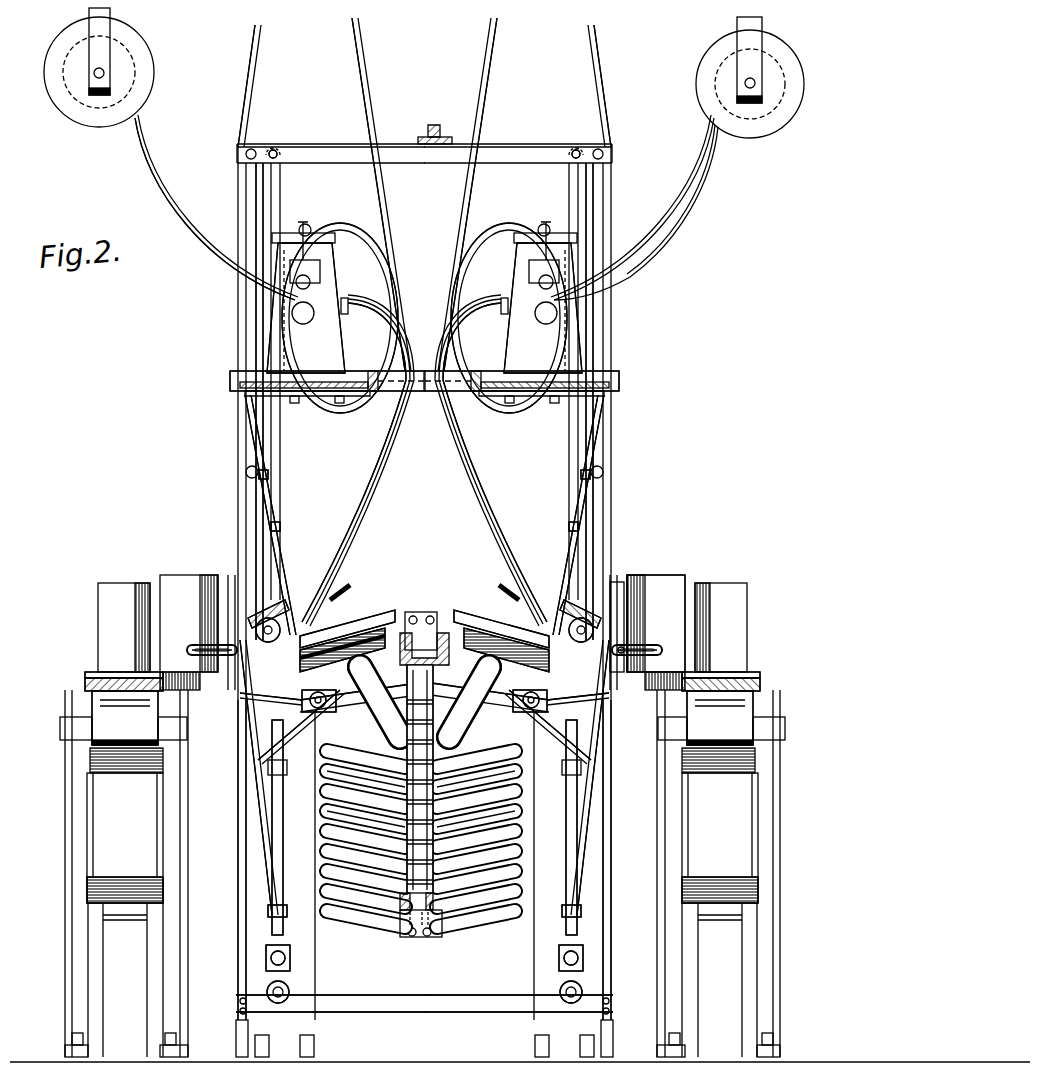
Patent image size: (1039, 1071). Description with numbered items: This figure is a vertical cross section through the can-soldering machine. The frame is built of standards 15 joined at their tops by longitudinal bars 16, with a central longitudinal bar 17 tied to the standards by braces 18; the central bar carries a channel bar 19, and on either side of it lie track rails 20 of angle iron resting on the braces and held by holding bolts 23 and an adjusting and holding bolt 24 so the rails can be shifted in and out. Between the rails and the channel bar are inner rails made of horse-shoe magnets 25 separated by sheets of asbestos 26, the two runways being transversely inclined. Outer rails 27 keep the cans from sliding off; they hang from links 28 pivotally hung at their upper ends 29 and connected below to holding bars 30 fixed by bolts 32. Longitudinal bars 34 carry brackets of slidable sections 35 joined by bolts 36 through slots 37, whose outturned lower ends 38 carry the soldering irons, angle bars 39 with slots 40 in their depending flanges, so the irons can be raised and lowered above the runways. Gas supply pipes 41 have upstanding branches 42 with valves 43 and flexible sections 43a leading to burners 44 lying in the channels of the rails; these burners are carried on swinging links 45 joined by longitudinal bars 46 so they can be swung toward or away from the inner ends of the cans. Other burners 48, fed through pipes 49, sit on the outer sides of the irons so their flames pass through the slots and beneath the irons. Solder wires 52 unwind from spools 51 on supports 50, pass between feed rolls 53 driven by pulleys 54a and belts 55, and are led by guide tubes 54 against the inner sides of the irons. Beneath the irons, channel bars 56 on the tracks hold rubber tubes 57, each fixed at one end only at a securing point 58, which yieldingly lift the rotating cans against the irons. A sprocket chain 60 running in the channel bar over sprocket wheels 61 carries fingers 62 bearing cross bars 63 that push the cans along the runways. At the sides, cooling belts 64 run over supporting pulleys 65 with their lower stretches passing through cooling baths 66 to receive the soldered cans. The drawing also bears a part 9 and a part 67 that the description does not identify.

The pivot arm 9 is at (185, 650).
The standards 15 is at (244, 980).
The longitudinal bars 16 is at (436, 136).
The central longitudinally disposed bar 17 is at (448, 640).
The braces 18 is at (285, 700).
The channel bar 19 is at (440, 612).
The track rails 20 is at (506, 660).
The holding bolts 23 is at (433, 805).
The adjusting and holding bolt 24 is at (262, 760).
The horse-shoe magnets 25 is at (421, 784).
The sheets of asbestos 26 is at (368, 622).
The rails 27 is at (300, 695).
The links 28 is at (270, 452).
The pivot 29 is at (276, 150).
The holding bars 30 is at (662, 656).
The bolts 32 is at (612, 620).
The longitudinal bars 34 is at (232, 386).
The bracket sections 35 is at (256, 468).
The bolts 36 is at (280, 522).
The slots 37 is at (645, 650).
The outturned lower ends 38 is at (255, 610).
The soldering irons 39 is at (272, 620).
The slots 40 is at (352, 646).
The gas supply pipes 41 is at (292, 1000).
The upstanding branches 42 is at (292, 950).
The valves 43 is at (292, 965).
The flexible sections 43a is at (270, 880).
The burners 44 is at (342, 656).
The swinging links 45 is at (272, 840).
The longitudinal bars 46 is at (300, 702).
The burners 48 is at (300, 628).
The pipes 49 is at (268, 900).
The supports 50 is at (110, 44).
The spools 51 is at (98, 118).
The wires 52 is at (158, 196).
The feed rolls 53 is at (318, 294).
The guide tubes 54 is at (408, 350).
The pulleys 54a is at (348, 240).
The belts 55 is at (362, 78).
The channel bars 56 is at (370, 768).
The rubber tubes 57 is at (352, 604).
The securing point 58 is at (325, 800).
The sprocket chain 60 is at (403, 930).
The sprocket wheels 61 is at (405, 780).
The fingers 62 is at (421, 616).
The cross bars 63 is at (390, 610).
The cooling belts 64 is at (88, 676).
The supporting pulleys 65 is at (422, 718).
The cooling baths 66 is at (90, 888).
The gasket 67 is at (140, 673).